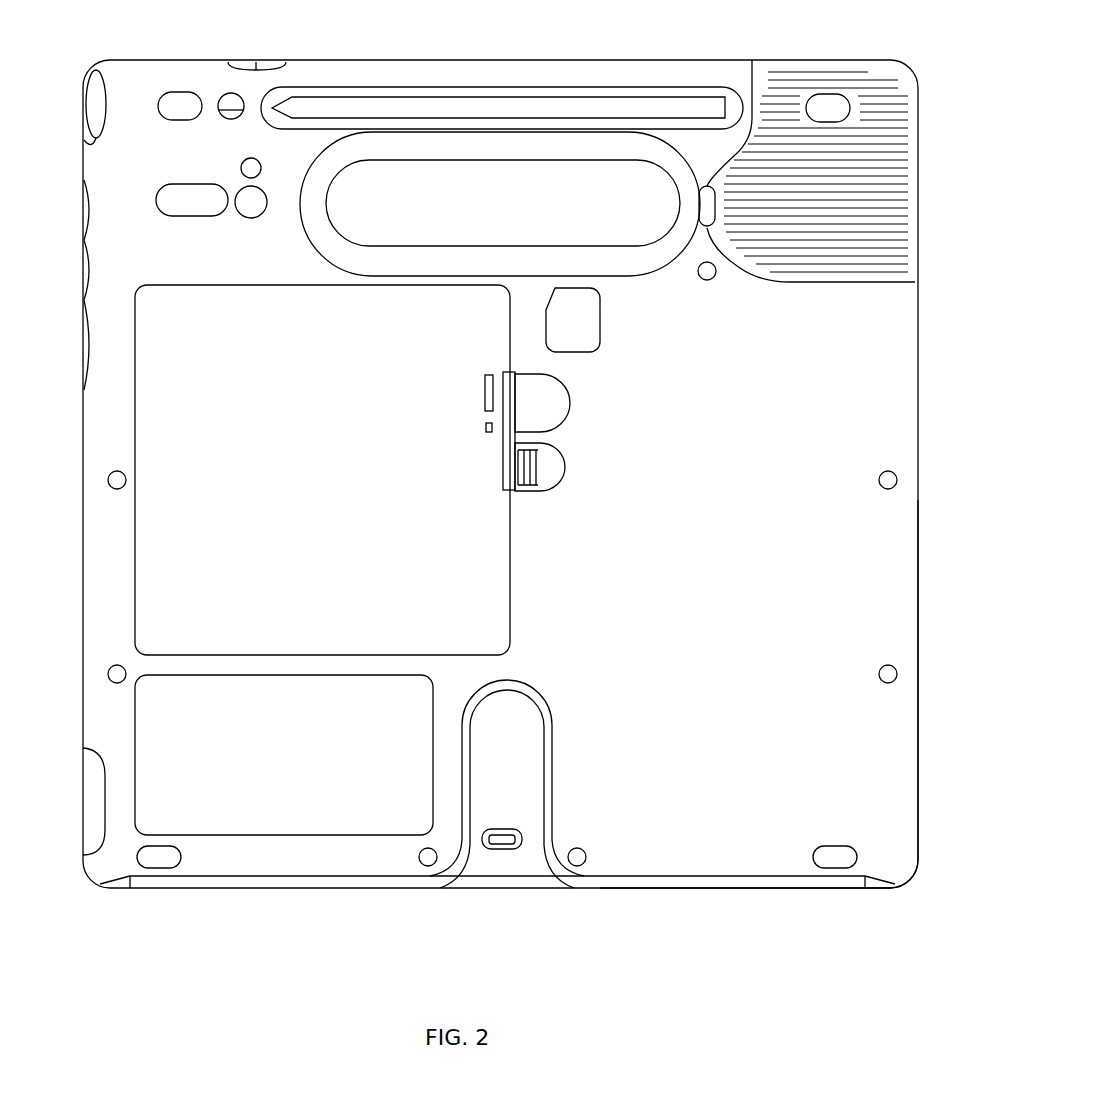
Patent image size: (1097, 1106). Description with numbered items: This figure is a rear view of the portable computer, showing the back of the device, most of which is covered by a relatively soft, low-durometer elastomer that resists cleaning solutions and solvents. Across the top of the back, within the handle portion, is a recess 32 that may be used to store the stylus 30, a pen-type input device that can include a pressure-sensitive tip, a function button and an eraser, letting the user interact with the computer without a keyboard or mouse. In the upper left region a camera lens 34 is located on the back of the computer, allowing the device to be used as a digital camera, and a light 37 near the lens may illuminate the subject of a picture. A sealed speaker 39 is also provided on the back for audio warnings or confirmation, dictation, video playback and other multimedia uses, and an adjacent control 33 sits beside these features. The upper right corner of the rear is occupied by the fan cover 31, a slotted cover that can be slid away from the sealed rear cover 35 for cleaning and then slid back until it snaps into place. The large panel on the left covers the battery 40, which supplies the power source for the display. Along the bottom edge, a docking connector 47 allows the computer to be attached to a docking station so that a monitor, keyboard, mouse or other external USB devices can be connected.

The stylus 30 is at (410, 92).
The fan cover 31 is at (790, 100).
The recess 32 is at (515, 90).
The power button 33 is at (220, 100).
The camera lens 34 is at (250, 215).
The sealed rear cover 35 is at (727, 716).
The light 37 is at (240, 170).
The sealed speaker 39 is at (170, 212).
The battery 40 is at (332, 461).
The docking connector 47 is at (487, 880).